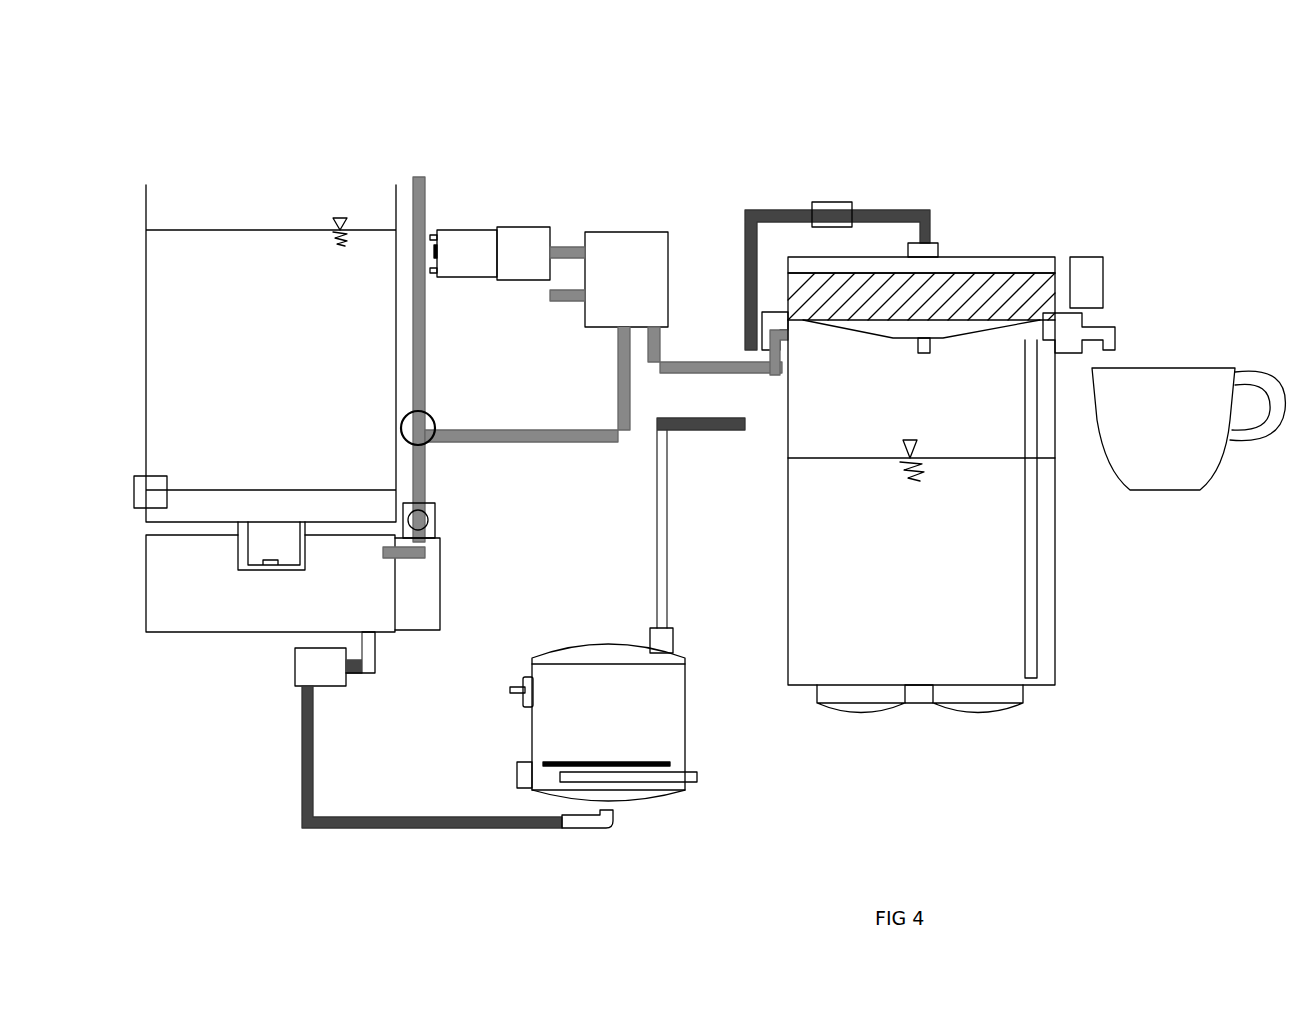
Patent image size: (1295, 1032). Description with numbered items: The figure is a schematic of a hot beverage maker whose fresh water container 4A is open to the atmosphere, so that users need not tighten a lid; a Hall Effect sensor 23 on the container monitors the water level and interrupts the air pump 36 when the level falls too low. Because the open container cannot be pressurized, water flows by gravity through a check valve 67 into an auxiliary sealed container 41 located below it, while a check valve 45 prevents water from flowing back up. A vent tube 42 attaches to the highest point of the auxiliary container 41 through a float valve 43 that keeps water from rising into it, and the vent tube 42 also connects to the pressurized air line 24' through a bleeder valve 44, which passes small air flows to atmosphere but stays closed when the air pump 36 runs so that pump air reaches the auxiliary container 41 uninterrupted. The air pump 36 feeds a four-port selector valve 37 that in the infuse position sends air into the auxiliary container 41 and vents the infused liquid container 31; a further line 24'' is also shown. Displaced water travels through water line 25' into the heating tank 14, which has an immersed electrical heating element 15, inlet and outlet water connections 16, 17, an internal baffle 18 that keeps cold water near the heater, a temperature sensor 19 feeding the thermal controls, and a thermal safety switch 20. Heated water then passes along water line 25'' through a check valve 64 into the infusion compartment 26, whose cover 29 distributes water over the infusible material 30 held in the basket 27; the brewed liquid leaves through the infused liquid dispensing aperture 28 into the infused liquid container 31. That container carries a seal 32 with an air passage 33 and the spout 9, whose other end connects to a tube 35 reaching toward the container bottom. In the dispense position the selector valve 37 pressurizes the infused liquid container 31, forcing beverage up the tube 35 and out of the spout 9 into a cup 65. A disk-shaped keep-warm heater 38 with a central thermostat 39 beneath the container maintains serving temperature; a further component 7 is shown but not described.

The fresh water container 4A is at (278, 198).
The vent tube 42 is at (420, 185).
The air pump 36 is at (472, 250).
The selector valve 37 is at (635, 255).
The air line 24' is at (527, 399).
The water conduit 24'' is at (715, 342).
The bleeder valve 44 is at (432, 418).
The Hall Effect sensor 23 is at (137, 492).
The auxiliary sealed container 41 is at (210, 586).
The check valve 67 is at (263, 537).
The float valve 43 is at (435, 520).
The check valve 45 is at (310, 662).
The water line 25' is at (400, 757).
The water line 25'' is at (670, 523).
The heating tank 14 is at (608, 698).
The outlet water connection 17 is at (673, 640).
The temperature sensor 19 is at (510, 690).
The internal baffle 18 is at (665, 763).
The electrical heating element 15 is at (660, 778).
The thermal safety switch 20 is at (527, 772).
The inlet water connection 16 is at (595, 828).
The basket 27 is at (762, 305).
The check valve 64 is at (832, 215).
The cover 29 is at (962, 262).
The infusible material 30 is at (993, 285).
The infusion compartment 26 is at (832, 286).
The air passage 33 is at (790, 327).
The seal 32 is at (767, 317).
The infused liquid dispensing aperture 28 is at (917, 355).
The infused liquid container 31 is at (944, 571).
The tube 35 is at (1030, 627).
The thermostat 39 is at (913, 705).
The keep-warm heater 38 is at (998, 708).
The control unit 7 is at (1088, 285).
The spout 9 is at (1108, 330).
The cup 65 is at (1172, 410).